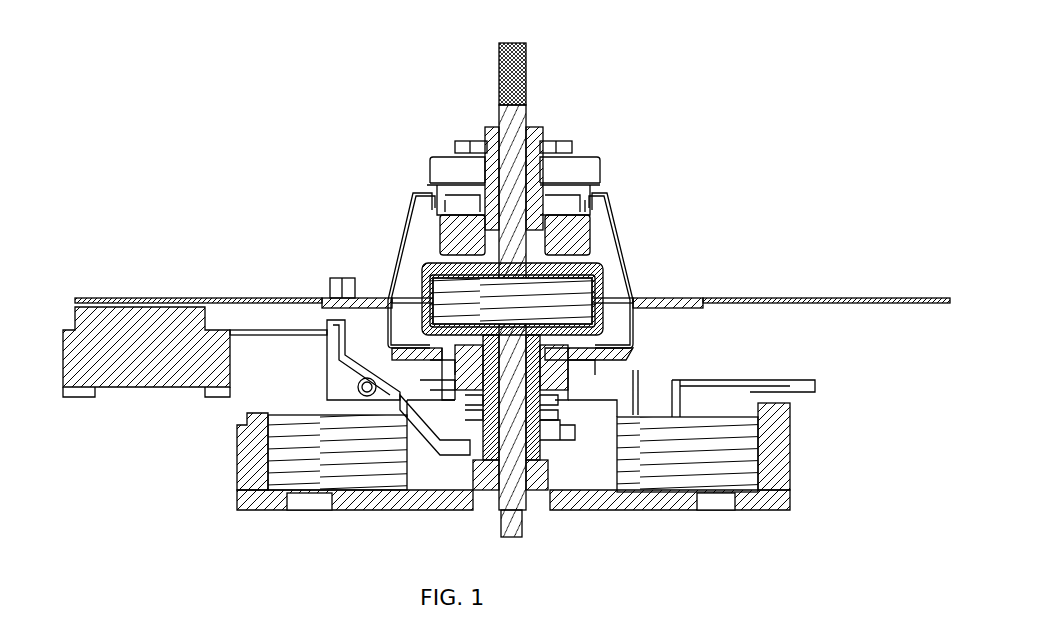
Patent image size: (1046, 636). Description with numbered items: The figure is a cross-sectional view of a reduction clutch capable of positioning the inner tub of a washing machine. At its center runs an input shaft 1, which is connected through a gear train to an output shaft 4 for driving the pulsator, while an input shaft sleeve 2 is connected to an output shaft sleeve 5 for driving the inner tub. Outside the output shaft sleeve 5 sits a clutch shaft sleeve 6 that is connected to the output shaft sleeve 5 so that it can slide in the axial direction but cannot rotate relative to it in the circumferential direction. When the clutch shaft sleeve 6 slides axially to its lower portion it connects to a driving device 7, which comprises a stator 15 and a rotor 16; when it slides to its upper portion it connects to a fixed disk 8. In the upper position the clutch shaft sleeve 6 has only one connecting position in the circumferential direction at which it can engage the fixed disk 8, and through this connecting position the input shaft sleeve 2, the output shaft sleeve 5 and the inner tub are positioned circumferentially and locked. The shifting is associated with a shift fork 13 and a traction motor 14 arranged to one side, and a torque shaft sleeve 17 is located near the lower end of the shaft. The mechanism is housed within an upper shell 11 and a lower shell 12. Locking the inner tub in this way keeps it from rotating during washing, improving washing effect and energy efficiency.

The input shaft 1 is at (518, 432).
The input shaft sleeve 2 is at (490, 432).
The output shaft 4 is at (521, 74).
The output shaft sleeve 5 is at (542, 147).
The clutch shaft sleeve 6 is at (567, 422).
The driving device 7 is at (590, 450).
The fixed disk 8 is at (598, 352).
The upper shell 11 is at (635, 258).
The lower shell 12 is at (641, 330).
The shift fork 13 is at (404, 388).
The traction motor 14 is at (174, 356).
The stator 15 is at (717, 448).
The rotor 16 is at (768, 500).
The torque shaft sleeve 17 is at (546, 468).